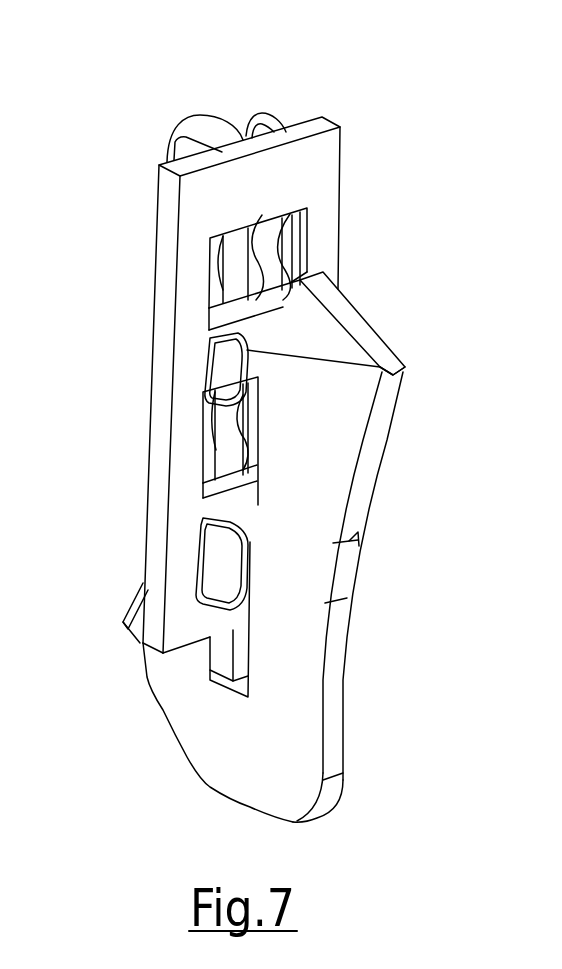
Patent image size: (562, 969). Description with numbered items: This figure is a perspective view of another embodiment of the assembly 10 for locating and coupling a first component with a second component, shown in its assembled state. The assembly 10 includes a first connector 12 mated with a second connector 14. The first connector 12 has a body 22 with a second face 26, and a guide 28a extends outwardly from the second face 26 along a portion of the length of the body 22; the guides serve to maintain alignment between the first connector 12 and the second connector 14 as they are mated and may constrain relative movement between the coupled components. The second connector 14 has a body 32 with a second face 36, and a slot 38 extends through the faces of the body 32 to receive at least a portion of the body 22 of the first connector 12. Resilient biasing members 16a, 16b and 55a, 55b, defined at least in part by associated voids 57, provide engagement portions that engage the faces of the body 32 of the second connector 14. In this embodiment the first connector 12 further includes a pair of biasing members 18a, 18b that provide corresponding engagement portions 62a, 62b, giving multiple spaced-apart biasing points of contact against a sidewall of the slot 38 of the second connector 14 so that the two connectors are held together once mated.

The assembly 10 is at (394, 162).
The first connector 12 is at (158, 208).
The second connector 14 is at (395, 352).
The biasing member 16a is at (262, 246).
The biasing member 16b is at (248, 430).
The biasing member 18a is at (262, 325).
The biasing member 18b is at (243, 515).
The body 22 is at (167, 252).
The second face 26 is at (297, 166).
The guide 28a is at (212, 368).
The body 32 is at (358, 490).
The second face 36 is at (282, 758).
The slot 38 is at (238, 647).
The biasing member 55a is at (213, 275).
The biasing member 55b is at (207, 440).
The void 57 is at (287, 258).
The engagement portion 62a is at (383, 368).
The engagement portion 62b is at (333, 543).